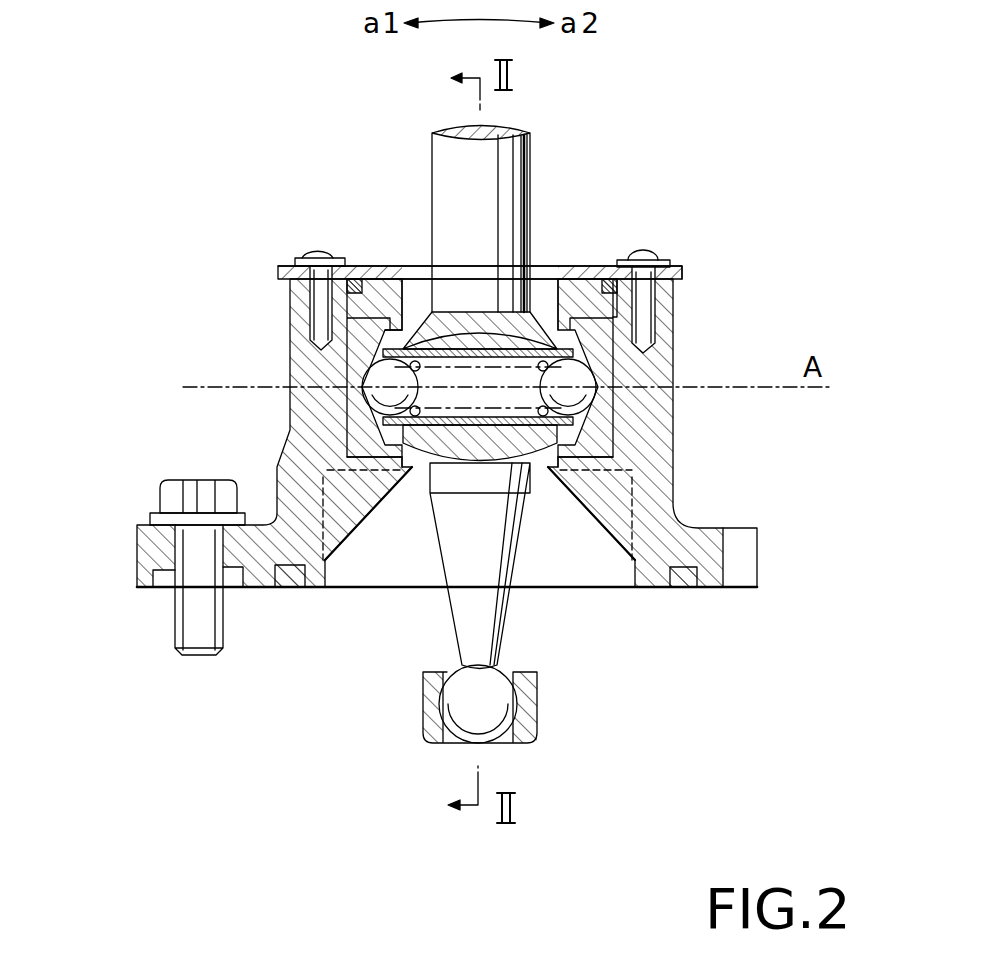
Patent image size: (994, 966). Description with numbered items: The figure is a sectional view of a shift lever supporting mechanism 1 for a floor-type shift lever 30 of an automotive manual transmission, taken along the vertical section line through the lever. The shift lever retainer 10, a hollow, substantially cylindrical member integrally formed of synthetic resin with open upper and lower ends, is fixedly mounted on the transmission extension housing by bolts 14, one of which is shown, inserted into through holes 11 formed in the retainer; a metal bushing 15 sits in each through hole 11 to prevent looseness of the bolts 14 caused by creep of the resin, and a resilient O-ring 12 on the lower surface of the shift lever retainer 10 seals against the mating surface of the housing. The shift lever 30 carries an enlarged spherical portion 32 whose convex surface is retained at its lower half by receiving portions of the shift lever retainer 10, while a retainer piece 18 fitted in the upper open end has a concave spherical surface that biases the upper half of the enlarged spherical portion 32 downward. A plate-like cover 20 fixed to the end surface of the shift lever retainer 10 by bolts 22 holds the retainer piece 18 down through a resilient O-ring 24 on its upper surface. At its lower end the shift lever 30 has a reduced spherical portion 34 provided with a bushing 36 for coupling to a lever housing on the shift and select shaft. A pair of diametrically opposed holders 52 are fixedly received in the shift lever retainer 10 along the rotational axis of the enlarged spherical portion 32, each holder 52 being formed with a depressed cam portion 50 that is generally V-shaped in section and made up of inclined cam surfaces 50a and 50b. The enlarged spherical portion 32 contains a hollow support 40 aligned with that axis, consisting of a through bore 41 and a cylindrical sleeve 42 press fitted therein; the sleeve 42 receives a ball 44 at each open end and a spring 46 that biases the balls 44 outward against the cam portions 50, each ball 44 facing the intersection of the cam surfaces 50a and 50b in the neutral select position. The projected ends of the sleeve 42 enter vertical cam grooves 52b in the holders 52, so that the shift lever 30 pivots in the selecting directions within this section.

The shift lever supporting mechanism 1 is at (687, 282).
The shift lever retainer 10 is at (655, 437).
The through hole 11 is at (167, 560).
The resilient O-ring 12 is at (688, 590).
The bolt 14 is at (200, 645).
The metal bushing 15 is at (248, 523).
The retainer piece 18 is at (375, 278).
The cover 20 is at (580, 266).
The bolt 22 is at (320, 312).
The resilient O-ring 24 is at (608, 283).
The shift lever 30 is at (450, 182).
The enlarged spherical portion 32 is at (535, 310).
The reduced spherical portion 34 is at (500, 712).
The bushing 36 is at (425, 718).
The hollow support 40 is at (472, 434).
The through bore 41 is at (445, 335).
The cylindrical sleeve 42 is at (495, 423).
The ball 44 is at (600, 382).
The spring 46 is at (432, 414).
The cam portion 50 is at (370, 413).
The inclined cam surface 50a is at (345, 440).
The inclined cam surface 50b is at (375, 345).
The holder 52 is at (410, 362).
The vertical cam groove 52b is at (393, 330).